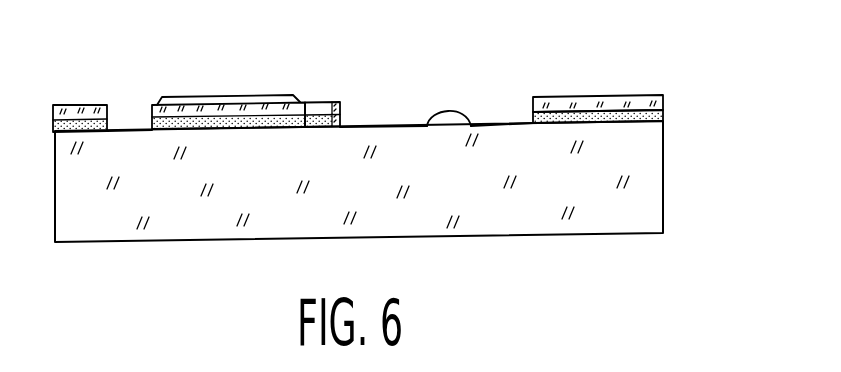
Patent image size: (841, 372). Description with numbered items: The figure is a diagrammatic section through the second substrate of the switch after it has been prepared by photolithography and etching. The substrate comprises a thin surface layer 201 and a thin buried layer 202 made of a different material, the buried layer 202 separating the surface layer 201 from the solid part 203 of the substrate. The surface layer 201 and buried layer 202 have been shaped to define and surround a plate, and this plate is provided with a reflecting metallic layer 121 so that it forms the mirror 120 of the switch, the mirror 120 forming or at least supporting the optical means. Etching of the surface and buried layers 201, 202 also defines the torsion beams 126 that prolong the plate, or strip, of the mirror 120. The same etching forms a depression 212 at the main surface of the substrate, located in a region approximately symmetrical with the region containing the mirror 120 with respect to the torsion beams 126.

The mirror 120 is at (211, 137).
The reflecting metallic layer 121 is at (239, 96).
The torsion beams 126 is at (320, 108).
The surface layer 201 is at (557, 101).
The buried layer 202 is at (633, 114).
The solid part 203 is at (647, 163).
The depression 212 is at (471, 126).